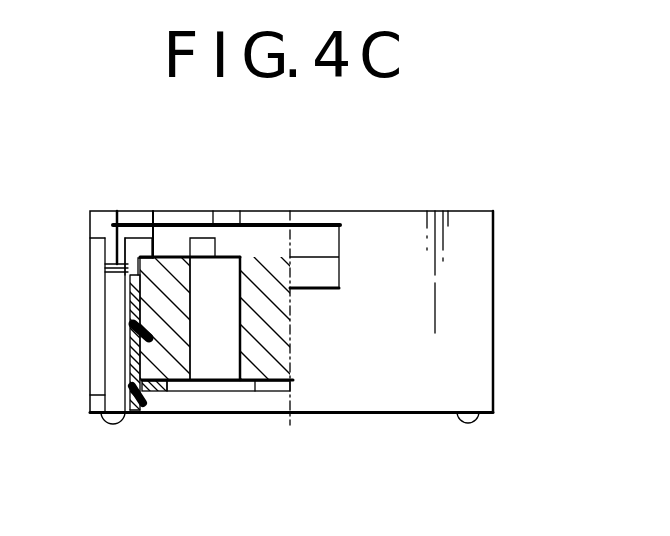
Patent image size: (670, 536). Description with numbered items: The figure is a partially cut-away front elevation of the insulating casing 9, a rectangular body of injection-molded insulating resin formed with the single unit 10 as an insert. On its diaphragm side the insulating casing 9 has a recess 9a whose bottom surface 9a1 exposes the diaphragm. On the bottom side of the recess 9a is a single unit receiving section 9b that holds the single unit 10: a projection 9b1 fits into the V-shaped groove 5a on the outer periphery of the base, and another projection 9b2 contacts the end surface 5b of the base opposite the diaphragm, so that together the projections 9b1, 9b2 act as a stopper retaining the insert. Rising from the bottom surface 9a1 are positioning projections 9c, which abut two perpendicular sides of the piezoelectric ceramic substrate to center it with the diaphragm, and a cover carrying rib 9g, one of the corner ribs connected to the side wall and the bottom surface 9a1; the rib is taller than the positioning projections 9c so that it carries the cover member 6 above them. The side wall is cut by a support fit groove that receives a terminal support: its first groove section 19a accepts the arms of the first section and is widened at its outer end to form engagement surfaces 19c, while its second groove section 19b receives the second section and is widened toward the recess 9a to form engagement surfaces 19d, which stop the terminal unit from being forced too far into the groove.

The insulating casing 9 is at (388, 210).
The recess 9a is at (229, 242).
The bottom surface 9a1 is at (127, 318).
The single unit receiving section 9b is at (130, 347).
The projection 9b1 is at (130, 334).
The projection 9b2 is at (139, 407).
The positioning projection 9c is at (135, 237).
The cover carrying rib 9g is at (154, 210).
The cover member 6 is at (308, 222).
The V-shaped groove 5a is at (126, 328).
The end surface 5b is at (130, 401).
The single unit 10 is at (254, 389).
The first groove section 19a is at (112, 367).
The second groove section 19b is at (100, 383).
The engagement surface 19c is at (106, 408).
The engagement surface 19d is at (97, 237).